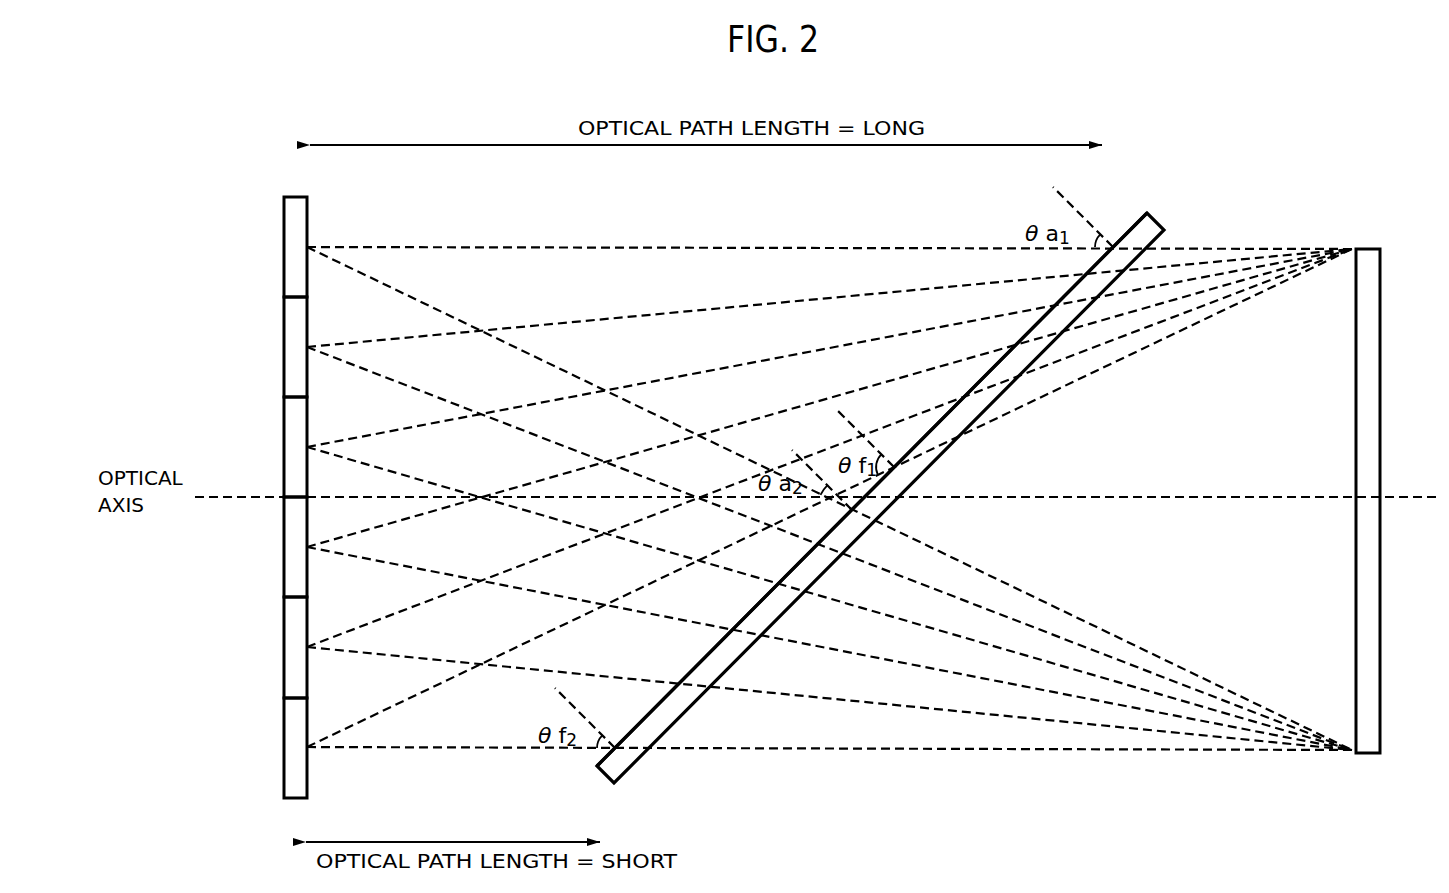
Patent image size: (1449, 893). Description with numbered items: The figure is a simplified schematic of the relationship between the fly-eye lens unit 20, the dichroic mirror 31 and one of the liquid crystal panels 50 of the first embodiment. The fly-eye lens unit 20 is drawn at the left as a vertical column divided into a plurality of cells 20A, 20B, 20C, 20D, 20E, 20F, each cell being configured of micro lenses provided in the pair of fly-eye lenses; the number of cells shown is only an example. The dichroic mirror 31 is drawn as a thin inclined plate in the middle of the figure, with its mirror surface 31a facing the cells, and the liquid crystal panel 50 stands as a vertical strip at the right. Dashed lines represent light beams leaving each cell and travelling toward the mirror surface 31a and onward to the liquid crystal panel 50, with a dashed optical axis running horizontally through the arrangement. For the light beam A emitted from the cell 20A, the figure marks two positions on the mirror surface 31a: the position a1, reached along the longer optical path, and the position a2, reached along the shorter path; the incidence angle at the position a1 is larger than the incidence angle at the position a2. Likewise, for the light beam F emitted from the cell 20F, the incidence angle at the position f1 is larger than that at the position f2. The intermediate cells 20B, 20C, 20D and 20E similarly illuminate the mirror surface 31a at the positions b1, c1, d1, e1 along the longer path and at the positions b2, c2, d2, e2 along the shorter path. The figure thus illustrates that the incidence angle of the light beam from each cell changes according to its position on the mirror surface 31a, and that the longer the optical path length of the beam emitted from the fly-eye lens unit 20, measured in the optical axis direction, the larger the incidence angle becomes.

The fly-eye lens unit 20 is at (257, 455).
The cell 20A is at (292, 255).
The cell 20B is at (292, 355).
The cell 20C is at (292, 455).
The cell 20D is at (292, 555).
The cell 20E is at (292, 655).
The cell 20F is at (292, 755).
The dichroic mirror 31 is at (1156, 232).
The mirror surface 31a is at (1138, 226).
The liquid crystal panel 50 is at (1370, 408).
The position a1 is at (1119, 253).
The position b1 is at (1091, 280).
The position c1 is at (1060, 311).
The position d1 is at (1021, 351).
The position e1 is at (969, 402).
The position f1 is at (900, 472).
The position a2 is at (857, 517).
The position b2 is at (823, 551).
The position c2 is at (783, 591).
The position d2 is at (738, 637).
The position e2 is at (684, 691).
The position f2 is at (620, 755).